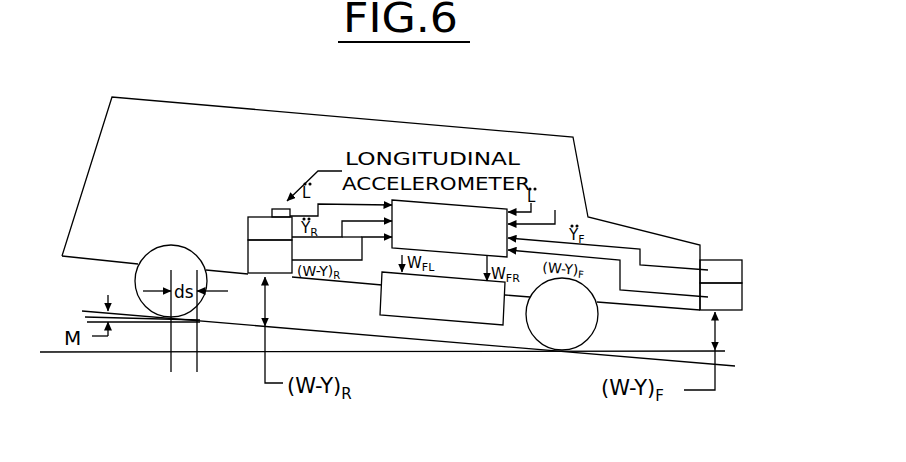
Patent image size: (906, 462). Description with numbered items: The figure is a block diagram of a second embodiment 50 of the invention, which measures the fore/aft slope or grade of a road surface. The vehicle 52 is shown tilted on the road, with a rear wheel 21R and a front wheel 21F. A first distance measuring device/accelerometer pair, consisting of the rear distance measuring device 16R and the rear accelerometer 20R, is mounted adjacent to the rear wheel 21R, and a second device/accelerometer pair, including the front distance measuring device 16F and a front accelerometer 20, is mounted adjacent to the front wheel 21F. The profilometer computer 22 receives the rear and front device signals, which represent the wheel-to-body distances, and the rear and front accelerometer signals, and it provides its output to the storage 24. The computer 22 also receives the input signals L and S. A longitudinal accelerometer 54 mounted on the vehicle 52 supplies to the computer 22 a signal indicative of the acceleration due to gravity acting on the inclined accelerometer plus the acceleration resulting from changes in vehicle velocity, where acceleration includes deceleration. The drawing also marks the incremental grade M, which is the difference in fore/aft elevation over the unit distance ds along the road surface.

The vehicle 52 is at (487, 130).
The longitudinal accelerometer 54 is at (276, 208).
The embodiment 50 is at (557, 193).
The profilometer computer 22 is at (400, 242).
The storage 24 is at (381, 298).
The rear accelerometer 20R is at (258, 229).
The rear distance measuring device 16R is at (258, 254).
The front vertical accelerometer 20 is at (718, 263).
The front distance measuring device 16F is at (731, 304).
The rear wheel 21R is at (156, 259).
The front wheel 21F is at (589, 323).